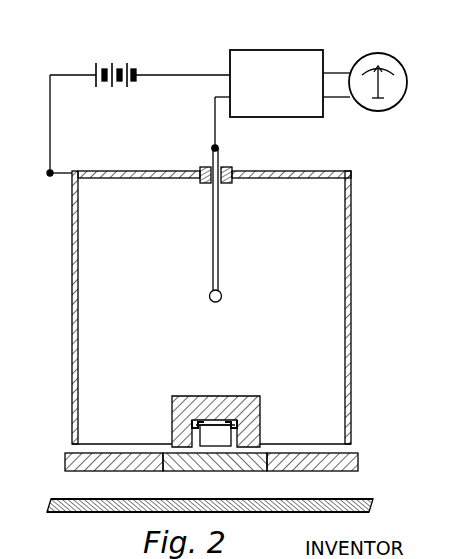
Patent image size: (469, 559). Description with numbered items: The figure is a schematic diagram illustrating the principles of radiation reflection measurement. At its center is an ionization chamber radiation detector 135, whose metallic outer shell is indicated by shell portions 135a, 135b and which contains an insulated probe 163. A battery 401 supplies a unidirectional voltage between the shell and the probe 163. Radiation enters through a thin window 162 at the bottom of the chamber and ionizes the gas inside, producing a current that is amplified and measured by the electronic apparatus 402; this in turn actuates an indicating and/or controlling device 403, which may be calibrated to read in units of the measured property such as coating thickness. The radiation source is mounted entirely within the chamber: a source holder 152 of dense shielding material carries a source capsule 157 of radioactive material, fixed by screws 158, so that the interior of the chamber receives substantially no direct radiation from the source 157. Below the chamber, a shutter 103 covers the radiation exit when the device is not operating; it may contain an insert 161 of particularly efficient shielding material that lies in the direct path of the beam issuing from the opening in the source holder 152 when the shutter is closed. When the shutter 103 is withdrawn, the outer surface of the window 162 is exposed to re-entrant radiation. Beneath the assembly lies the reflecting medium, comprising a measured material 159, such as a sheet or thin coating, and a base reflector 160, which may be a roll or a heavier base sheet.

The battery 401 is at (132, 63).
The amplifying and measuring device 402 is at (285, 50).
The indicating and/or controlling device 403 is at (400, 56).
The ionization chamber radiation detector 135 is at (210, 294).
The metallic outer shell portion 135a is at (72, 240).
The metallic outer shell portion 135b is at (320, 172).
The insulated probe 163 is at (219, 285).
The source holder 152 is at (235, 396).
The screws 158 is at (195, 422).
The source capsule 157 is at (226, 433).
The thin window 162 is at (328, 443).
The shutter 103 is at (362, 458).
The insert 161 is at (262, 458).
The measured material 159 is at (365, 496).
The base reflector 160 is at (125, 510).